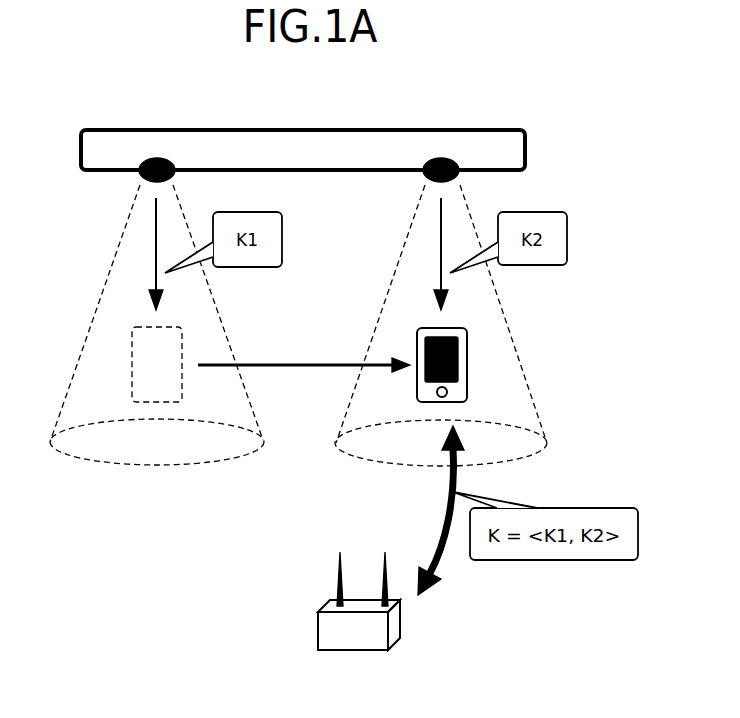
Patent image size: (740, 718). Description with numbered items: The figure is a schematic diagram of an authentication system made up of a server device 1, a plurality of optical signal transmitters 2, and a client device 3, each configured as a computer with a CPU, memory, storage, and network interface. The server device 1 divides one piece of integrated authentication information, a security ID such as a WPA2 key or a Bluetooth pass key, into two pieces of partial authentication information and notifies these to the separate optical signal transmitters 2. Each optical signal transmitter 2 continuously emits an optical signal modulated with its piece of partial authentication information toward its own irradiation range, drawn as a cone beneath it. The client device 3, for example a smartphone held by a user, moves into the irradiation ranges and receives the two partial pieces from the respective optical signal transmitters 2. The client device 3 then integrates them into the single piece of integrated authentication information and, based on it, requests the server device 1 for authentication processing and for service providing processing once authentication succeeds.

The server device 1 is at (318, 632).
The optical signal transmitter 2 is at (157, 160).
The client device 3 is at (467, 348).